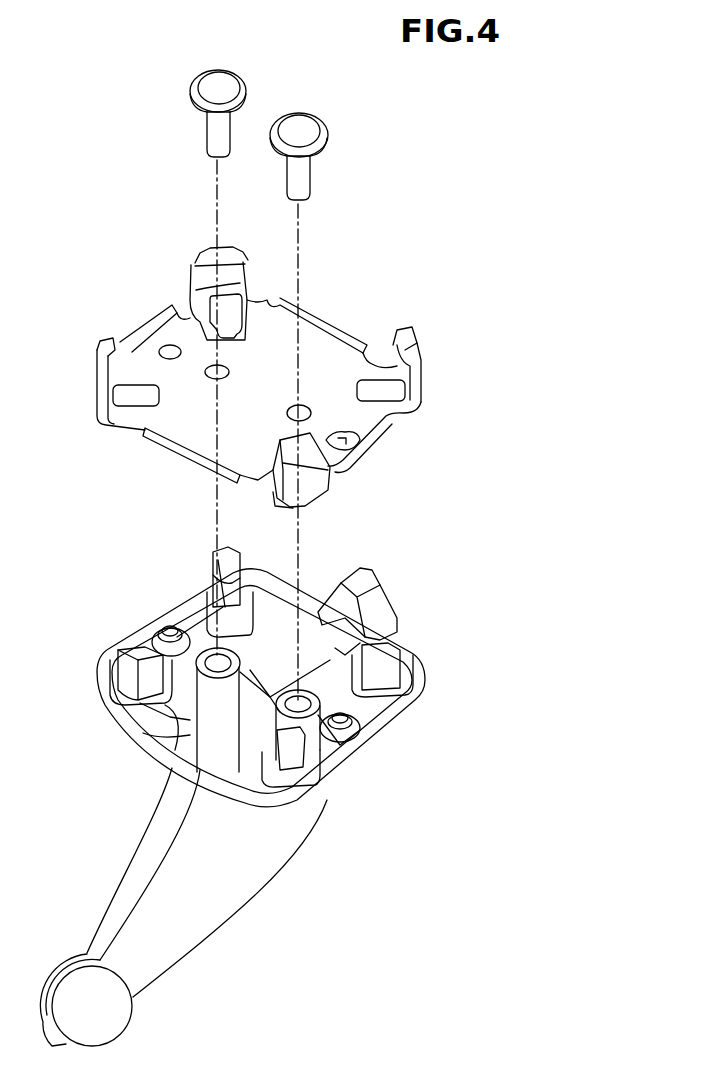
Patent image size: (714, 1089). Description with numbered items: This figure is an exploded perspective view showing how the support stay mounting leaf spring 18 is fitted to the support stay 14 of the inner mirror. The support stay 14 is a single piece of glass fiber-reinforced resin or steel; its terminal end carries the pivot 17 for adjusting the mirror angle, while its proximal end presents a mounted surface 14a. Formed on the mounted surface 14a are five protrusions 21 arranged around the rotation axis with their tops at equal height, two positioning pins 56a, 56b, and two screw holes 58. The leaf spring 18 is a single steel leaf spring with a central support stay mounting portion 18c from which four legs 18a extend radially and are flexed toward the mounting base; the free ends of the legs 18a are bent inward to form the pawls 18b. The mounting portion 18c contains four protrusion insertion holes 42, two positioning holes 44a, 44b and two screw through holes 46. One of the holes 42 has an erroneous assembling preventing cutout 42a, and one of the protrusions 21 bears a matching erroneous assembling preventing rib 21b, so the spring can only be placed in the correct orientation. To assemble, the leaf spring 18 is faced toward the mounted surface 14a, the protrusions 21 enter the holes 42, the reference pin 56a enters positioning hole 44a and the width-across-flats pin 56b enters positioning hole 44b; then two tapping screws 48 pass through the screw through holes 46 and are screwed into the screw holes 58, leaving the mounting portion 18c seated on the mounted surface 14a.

The support stay 14 is at (297, 791).
The mounted surface 14a is at (310, 583).
The pivot 17 is at (97, 1013).
The support stay mounting leaf spring 18 is at (290, 375).
The leg 18a is at (193, 312).
The pawl 18b is at (237, 247).
The support stay mounting portion 18c is at (313, 353).
The protrusion 21 is at (210, 580).
The erroneous assembling preventing rib 21b is at (217, 607).
The protrusion insertion hole 42 is at (236, 307).
The erroneous assembling preventing cutout 42a is at (232, 323).
The positioning hole 44a is at (167, 347).
The positioning hole 44b is at (352, 436).
The screw through hole 46 is at (215, 364).
The tapping screw 48 is at (207, 130).
The positioning pin 56a is at (167, 633).
The positioning pin 56b is at (355, 730).
The screw hole 58 is at (207, 667).